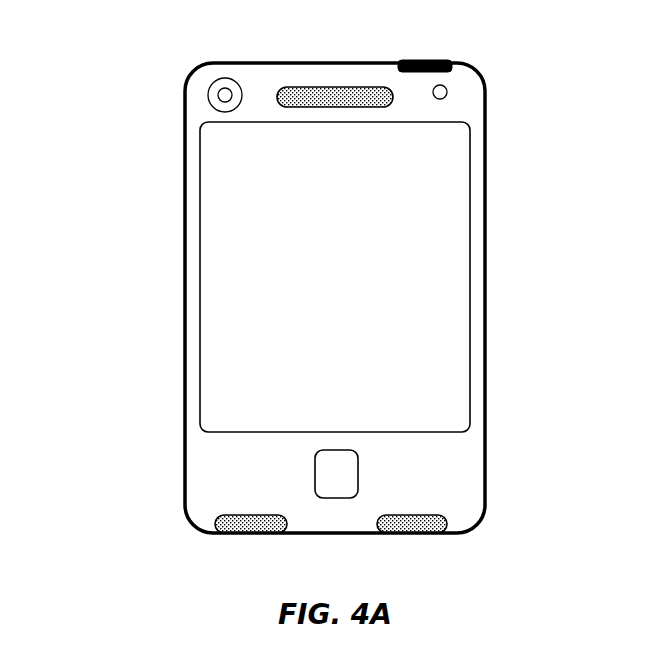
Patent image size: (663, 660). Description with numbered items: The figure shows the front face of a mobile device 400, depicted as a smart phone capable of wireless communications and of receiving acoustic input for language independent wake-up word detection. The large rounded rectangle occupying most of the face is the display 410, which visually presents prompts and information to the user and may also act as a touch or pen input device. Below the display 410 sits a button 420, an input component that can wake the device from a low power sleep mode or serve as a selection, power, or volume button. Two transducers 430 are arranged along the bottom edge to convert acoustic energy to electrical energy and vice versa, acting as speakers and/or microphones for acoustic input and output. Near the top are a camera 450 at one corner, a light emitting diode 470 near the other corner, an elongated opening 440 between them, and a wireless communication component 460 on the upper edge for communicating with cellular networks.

The mobile device 400 is at (158, 79).
The display 410 is at (350, 261).
The button 420 is at (314, 488).
The transducers 430 is at (257, 536).
The earpiece speaker 440 is at (317, 86).
The camera 450 is at (225, 77).
The wireless communication component 460 is at (415, 59).
The light emitting diode 470 is at (448, 92).